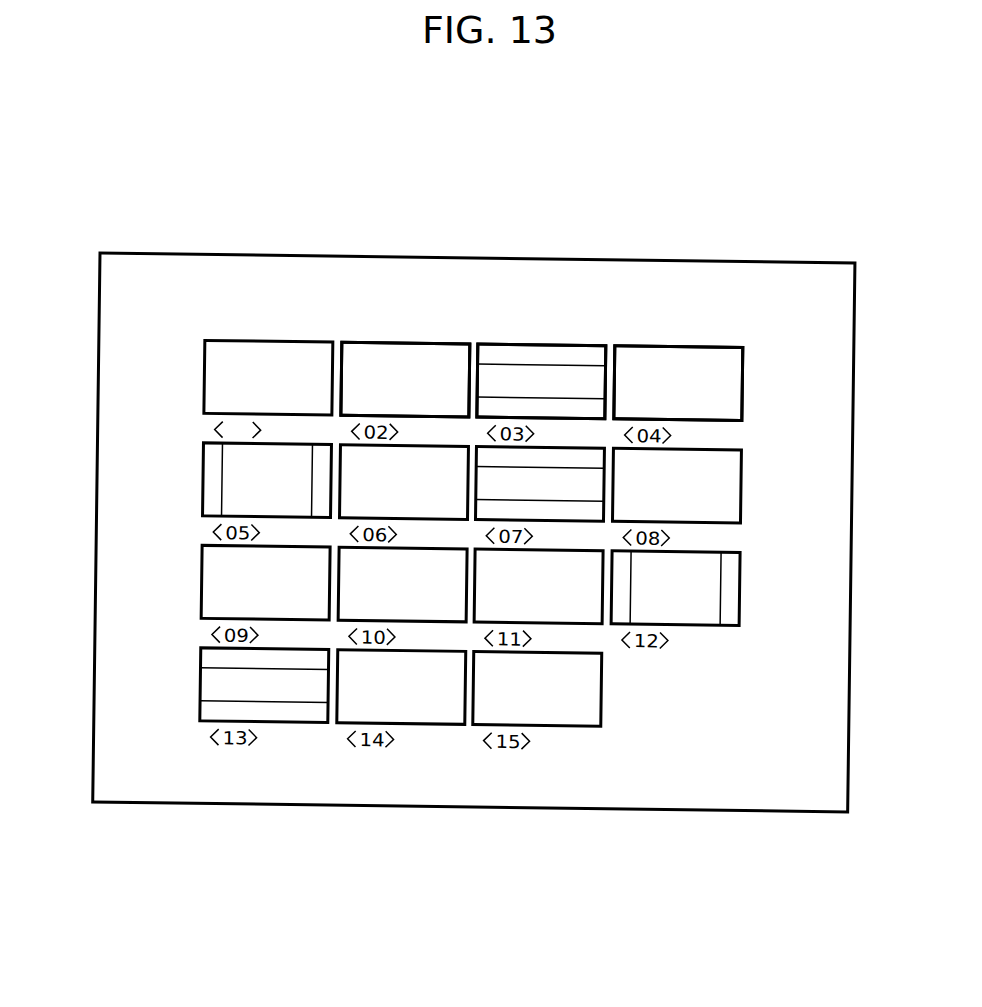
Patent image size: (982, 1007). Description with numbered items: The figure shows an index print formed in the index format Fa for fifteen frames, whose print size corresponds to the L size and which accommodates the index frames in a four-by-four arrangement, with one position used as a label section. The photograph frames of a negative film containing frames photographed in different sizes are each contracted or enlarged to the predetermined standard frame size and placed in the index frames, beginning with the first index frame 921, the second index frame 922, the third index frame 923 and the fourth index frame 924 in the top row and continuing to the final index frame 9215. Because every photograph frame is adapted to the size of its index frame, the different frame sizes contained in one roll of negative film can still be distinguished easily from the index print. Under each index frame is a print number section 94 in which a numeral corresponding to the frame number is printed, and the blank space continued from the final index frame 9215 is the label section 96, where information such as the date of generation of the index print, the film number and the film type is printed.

The first index frame 921 is at (257, 340).
The second index frame 922 is at (383, 342).
The third index frame 923 is at (520, 343).
The fourth index frame 924 is at (665, 344).
The final index frame 9215 is at (540, 728).
The print number section 94 is at (192, 431).
The label section 96 is at (671, 757).
The index format Fa is at (390, 240).